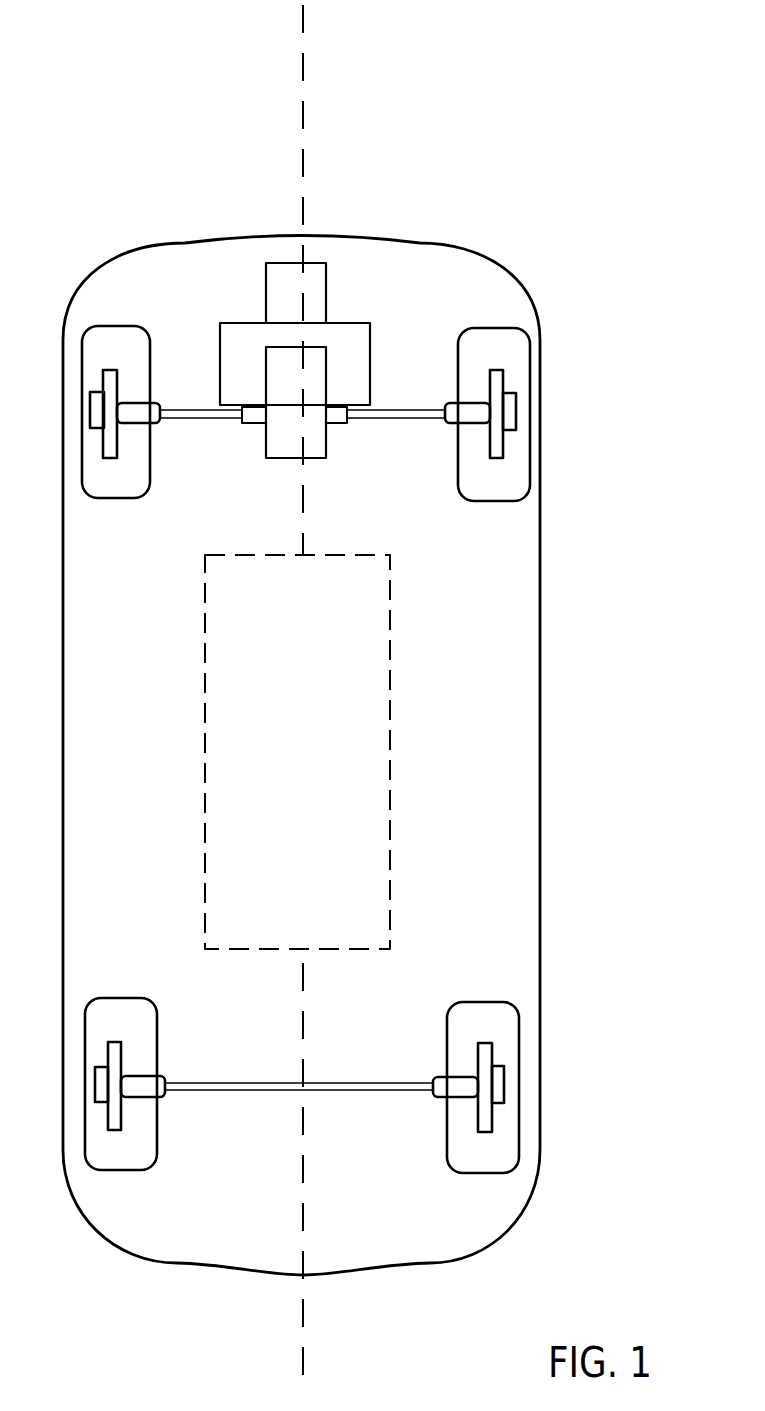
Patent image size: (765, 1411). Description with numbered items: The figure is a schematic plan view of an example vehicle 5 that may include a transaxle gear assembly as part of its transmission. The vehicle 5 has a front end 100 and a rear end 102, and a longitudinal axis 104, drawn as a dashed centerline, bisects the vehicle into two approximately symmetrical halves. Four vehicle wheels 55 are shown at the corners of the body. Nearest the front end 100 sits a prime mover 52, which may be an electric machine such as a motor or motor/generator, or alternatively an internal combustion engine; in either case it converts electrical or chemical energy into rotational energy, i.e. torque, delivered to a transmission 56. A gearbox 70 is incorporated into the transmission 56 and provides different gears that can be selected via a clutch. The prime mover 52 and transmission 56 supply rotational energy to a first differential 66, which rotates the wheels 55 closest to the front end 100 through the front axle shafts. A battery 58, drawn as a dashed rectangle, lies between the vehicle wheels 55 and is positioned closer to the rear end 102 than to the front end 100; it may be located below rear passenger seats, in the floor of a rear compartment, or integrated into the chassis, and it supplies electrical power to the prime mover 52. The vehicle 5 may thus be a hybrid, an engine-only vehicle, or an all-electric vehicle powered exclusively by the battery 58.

The vehicle 5 is at (633, 43).
The front end 100 is at (200, 180).
The rear end 102 is at (243, 1293).
The longitudinal axis 104 is at (303, 35).
The vehicle wheels 55 is at (500, 468).
The prime mover 52 is at (326, 263).
The transmission 56 is at (372, 365).
The first differential 66 is at (265, 440).
The gearbox 70 is at (265, 385).
The battery 58 is at (347, 637).